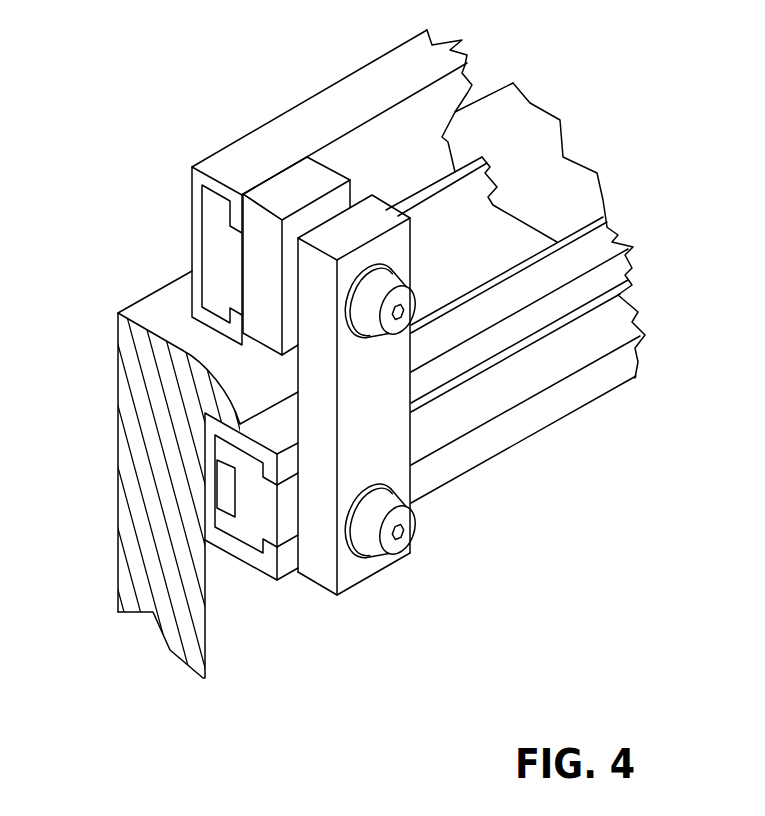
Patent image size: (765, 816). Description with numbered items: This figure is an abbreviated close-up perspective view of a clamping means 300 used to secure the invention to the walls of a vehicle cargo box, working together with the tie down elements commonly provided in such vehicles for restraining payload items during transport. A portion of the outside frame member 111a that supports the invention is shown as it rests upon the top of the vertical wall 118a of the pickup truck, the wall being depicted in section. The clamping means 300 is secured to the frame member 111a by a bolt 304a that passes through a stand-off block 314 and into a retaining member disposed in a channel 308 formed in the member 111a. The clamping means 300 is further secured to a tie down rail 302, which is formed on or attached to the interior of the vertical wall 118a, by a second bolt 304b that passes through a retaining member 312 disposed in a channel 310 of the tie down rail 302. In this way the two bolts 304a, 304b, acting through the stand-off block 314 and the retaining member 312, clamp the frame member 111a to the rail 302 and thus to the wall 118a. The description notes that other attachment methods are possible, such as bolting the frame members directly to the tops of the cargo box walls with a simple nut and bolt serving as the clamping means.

The member 111a is at (257, 140).
The vertical wall 118a is at (137, 303).
The clamping means 300 is at (313, 608).
The tie down rail 302 is at (510, 432).
The bolt 304a is at (400, 272).
The bolt 304b is at (413, 526).
The channel 308 is at (218, 252).
The channel 310 is at (592, 328).
The retaining member 312 is at (247, 528).
The stand-off block 314 is at (305, 175).